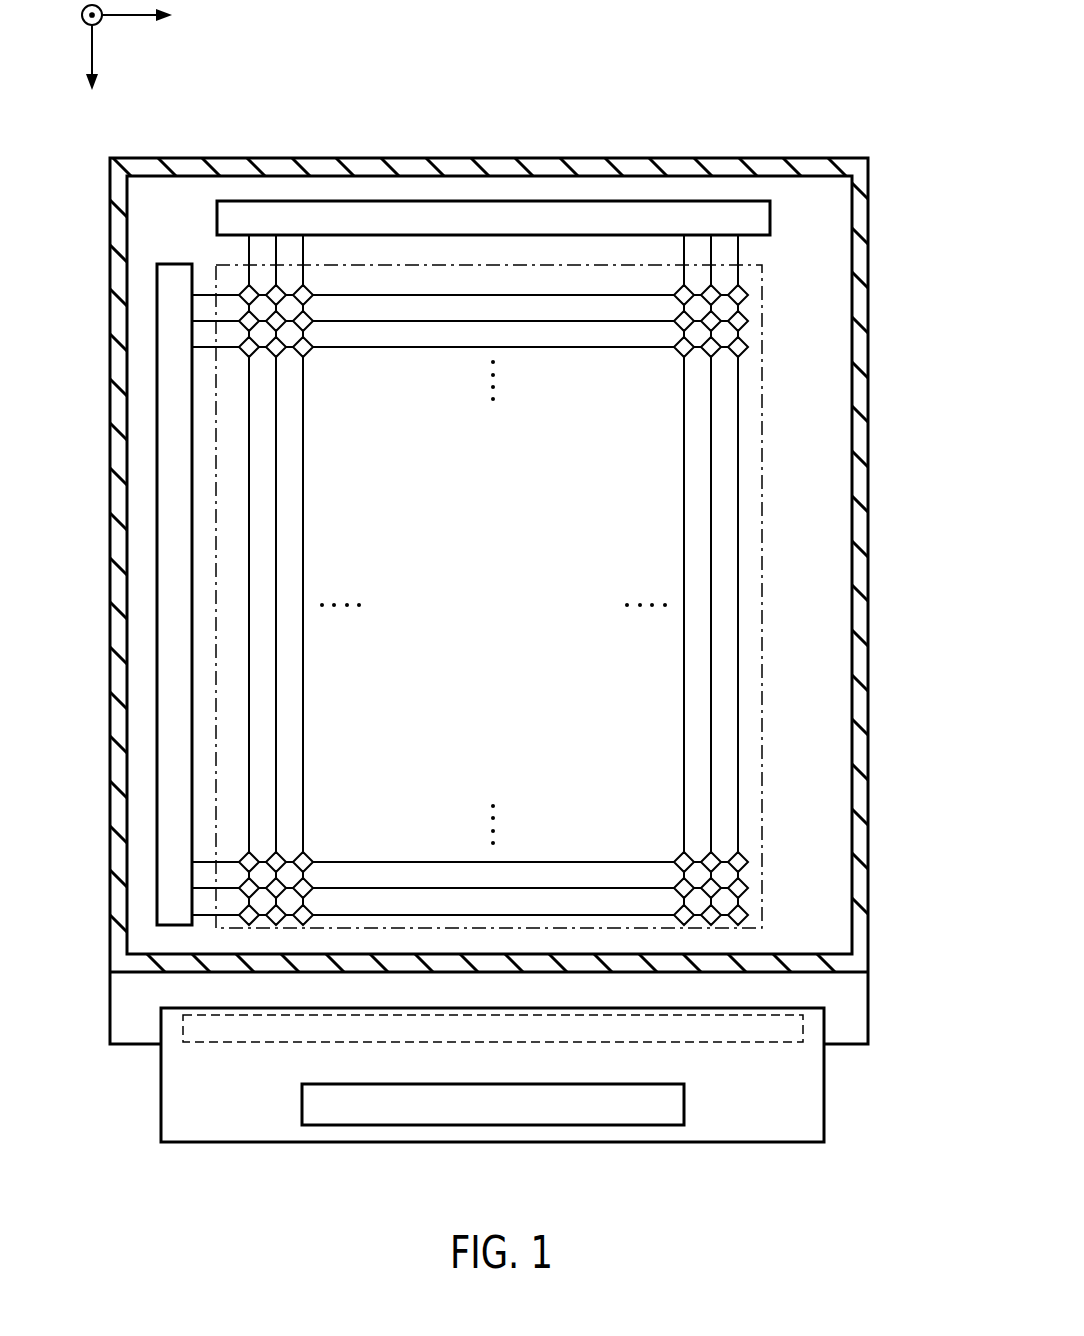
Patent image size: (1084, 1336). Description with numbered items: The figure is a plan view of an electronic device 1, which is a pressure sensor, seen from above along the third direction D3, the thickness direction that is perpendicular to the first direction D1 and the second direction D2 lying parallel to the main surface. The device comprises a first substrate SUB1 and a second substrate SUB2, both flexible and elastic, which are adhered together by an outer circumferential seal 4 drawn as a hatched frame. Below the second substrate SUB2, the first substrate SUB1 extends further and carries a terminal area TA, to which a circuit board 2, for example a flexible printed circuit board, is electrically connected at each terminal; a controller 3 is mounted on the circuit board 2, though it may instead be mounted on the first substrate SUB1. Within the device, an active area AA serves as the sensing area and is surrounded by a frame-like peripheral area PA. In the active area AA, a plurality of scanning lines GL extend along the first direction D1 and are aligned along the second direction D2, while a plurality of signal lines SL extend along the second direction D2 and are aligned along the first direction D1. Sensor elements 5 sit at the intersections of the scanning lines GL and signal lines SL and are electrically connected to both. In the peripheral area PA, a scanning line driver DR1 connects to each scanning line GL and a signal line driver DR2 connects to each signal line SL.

The electronic device 1 is at (500, 652).
The circuit board 2 is at (824, 1098).
The controller 3 is at (575, 1126).
The outer circumferential seal 4 is at (860, 340).
The sensor element 5 is at (276, 357).
The scanning line driver DR1 is at (173, 405).
The signal line driver DR2 is at (418, 212).
The scanning line GL is at (440, 323).
The signal line SL is at (276, 483).
The peripheral area PA is at (833, 478).
The active area AA is at (761, 557).
The first substrate SUB1 is at (860, 1008).
The second substrate SUB2 is at (860, 925).
The terminal area TA is at (233, 1045).
The first direction D1 is at (151, 16).
The second direction D2 is at (92, 75).
The third direction D3 is at (74, 12).